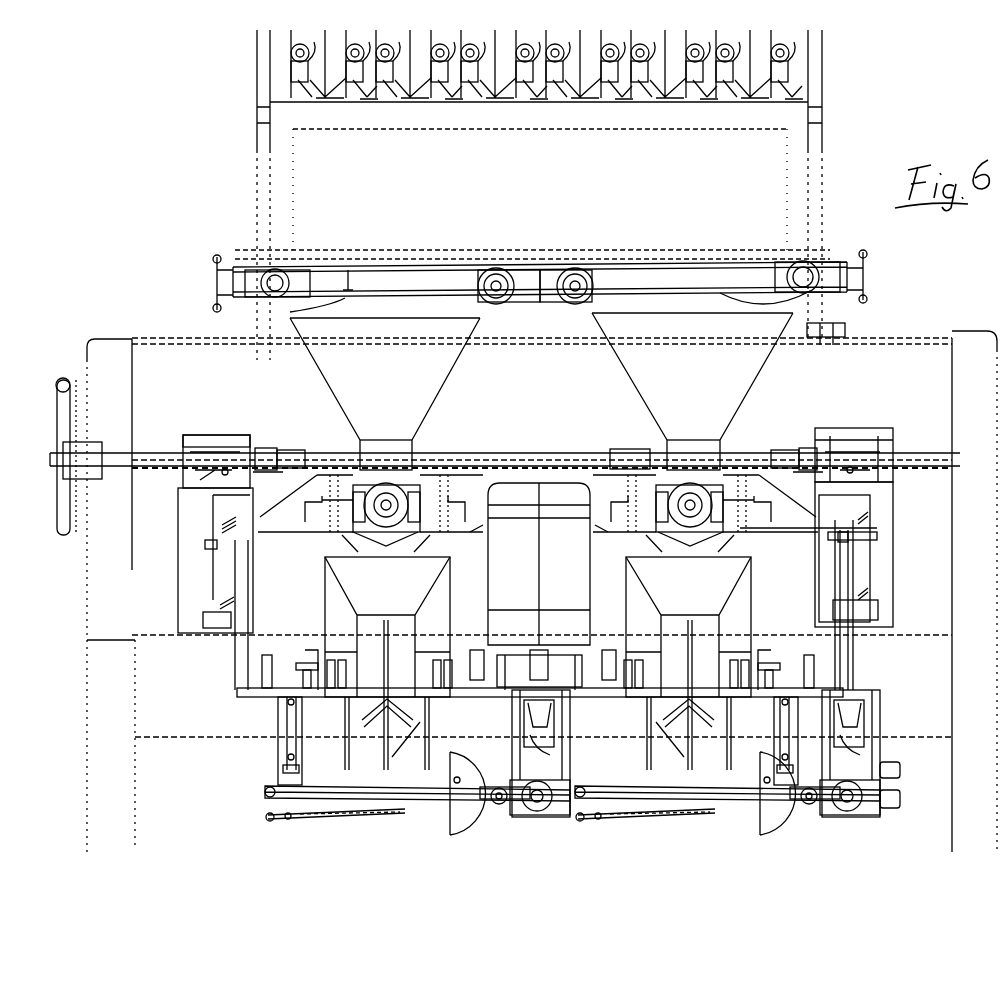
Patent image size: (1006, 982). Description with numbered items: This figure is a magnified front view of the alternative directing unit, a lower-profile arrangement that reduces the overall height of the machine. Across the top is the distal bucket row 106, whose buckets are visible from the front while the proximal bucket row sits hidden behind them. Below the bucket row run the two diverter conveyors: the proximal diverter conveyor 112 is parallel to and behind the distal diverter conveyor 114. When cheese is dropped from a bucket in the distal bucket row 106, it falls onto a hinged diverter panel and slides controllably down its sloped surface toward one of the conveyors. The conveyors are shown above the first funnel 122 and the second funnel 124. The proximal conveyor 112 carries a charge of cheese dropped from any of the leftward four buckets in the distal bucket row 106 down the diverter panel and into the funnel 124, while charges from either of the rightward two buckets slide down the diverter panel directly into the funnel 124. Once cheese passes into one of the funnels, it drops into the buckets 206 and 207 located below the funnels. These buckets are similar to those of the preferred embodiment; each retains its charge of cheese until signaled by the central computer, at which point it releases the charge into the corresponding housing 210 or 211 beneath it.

The distal bucket row 106 is at (809, 84).
The proximal diverter conveyor 112 is at (345, 298).
The distal diverter conveyor 114 is at (722, 298).
The first funnel 122 is at (423, 388).
The second funnel 124 is at (657, 395).
The bucket 206 is at (740, 538).
The bucket 207 is at (355, 541).
The housing 210 is at (756, 618).
The housing 211 is at (340, 612).